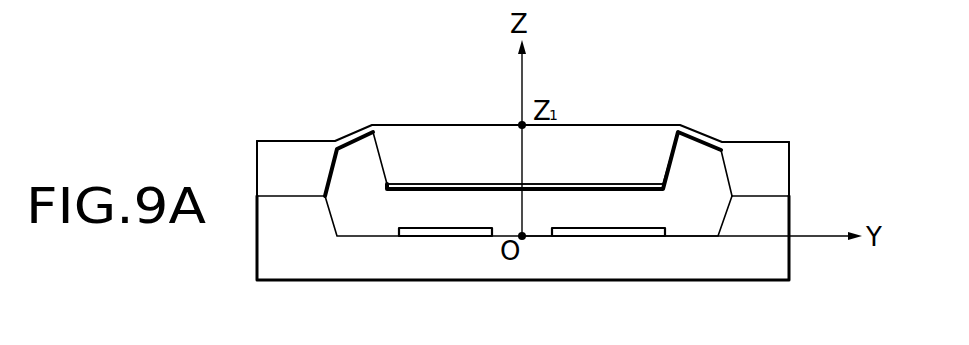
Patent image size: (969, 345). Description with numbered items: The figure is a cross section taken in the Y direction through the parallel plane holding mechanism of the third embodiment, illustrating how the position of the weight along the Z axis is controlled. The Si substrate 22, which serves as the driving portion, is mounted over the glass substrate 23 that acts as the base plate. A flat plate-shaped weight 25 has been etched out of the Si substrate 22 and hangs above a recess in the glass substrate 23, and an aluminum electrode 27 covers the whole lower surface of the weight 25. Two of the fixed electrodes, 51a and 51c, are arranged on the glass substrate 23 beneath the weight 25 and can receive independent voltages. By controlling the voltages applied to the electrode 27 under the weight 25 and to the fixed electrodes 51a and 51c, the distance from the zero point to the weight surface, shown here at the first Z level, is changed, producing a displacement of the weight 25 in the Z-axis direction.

The Si substrate 22 is at (777, 172).
The glass substrate 23 is at (766, 270).
The weight 25 is at (611, 155).
The aluminum electrode 27 is at (645, 183).
The fixed electrode 51a is at (462, 233).
The fixed electrode 51c is at (623, 233).